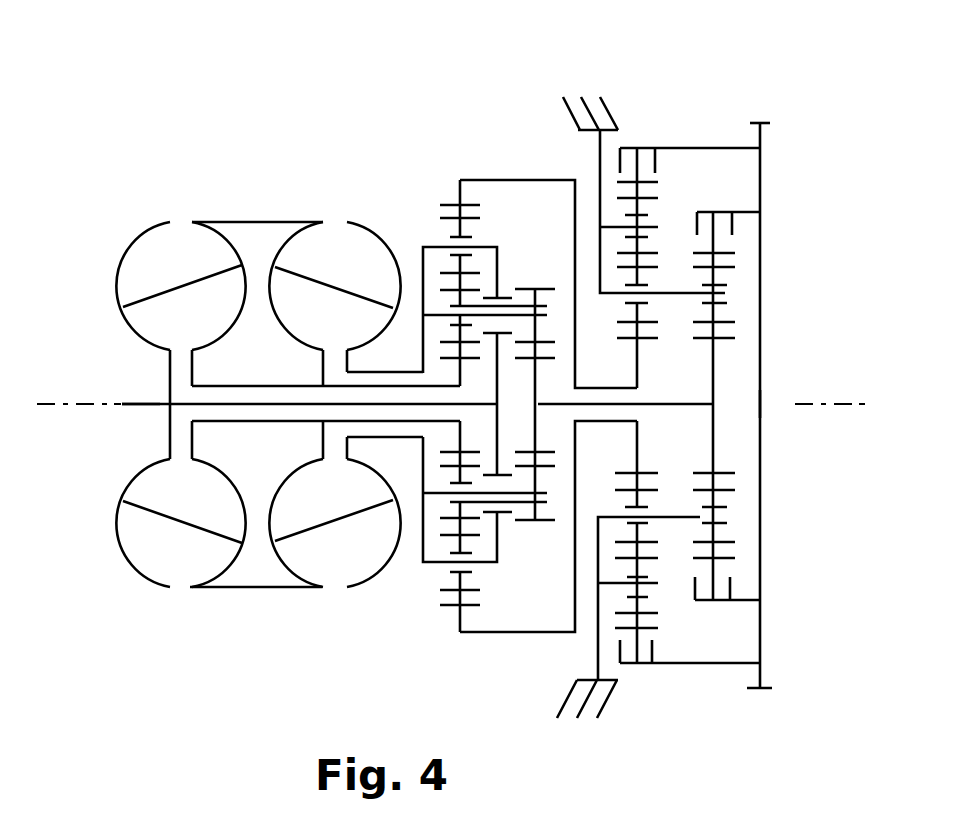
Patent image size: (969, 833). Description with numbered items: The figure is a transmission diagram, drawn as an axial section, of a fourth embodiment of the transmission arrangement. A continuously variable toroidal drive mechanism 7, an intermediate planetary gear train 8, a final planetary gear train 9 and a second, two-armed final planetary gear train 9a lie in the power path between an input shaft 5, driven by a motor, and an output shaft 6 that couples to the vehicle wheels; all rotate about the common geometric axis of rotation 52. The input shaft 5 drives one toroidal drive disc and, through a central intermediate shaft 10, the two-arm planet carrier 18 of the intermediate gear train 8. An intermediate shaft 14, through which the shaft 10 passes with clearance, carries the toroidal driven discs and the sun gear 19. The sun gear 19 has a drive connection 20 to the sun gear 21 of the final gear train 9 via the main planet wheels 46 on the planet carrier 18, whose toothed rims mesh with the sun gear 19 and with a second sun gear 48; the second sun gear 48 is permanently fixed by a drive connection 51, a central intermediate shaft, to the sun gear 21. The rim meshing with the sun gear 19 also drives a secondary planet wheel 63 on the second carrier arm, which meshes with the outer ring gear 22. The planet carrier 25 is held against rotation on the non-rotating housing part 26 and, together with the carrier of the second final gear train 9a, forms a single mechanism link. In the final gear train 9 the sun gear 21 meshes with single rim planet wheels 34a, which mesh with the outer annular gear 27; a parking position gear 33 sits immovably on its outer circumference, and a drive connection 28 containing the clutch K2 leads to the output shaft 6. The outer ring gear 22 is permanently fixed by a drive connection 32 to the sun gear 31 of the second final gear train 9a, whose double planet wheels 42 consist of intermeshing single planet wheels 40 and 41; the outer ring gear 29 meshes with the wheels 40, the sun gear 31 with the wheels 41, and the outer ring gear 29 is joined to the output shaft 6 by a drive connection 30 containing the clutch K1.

The input shaft 5 is at (133, 398).
The output shaft 6 is at (773, 402).
The continuously variable toroidal drive mechanism 7 is at (263, 593).
The intermediate planetary gear train 8 is at (486, 652).
The final planetary gear train 9 is at (785, 150).
The second final planetary gear train 9a is at (718, 672).
The central intermediate shaft 10 is at (186, 409).
The intermediate shaft 14 is at (231, 425).
The planet carrier 18 is at (499, 236).
The sun gear 19 is at (445, 455).
The drive connection 20 is at (487, 453).
The sun gear 21 is at (736, 329).
The outer ring gear 22 is at (437, 200).
The planet carrier 25 is at (592, 650).
The non-rotating housing part 26 is at (593, 103).
The outer annular gear 27 is at (743, 563).
The drive connection 28 is at (746, 606).
The outer ring gear 29 is at (661, 177).
The drive connection 30 is at (694, 145).
The sun gear 31 is at (661, 473).
The drive connection 32 is at (458, 638).
The parking position gear 33 is at (767, 122).
The single rim planet wheels 34a is at (730, 279).
The single planet wheels 40 is at (658, 619).
The single planet wheels 41 is at (660, 543).
The double planet wheels 42 is at (664, 249).
The main planet wheels 46 is at (452, 298).
The second sun gear 48 is at (546, 371).
The drive connection 51 is at (699, 412).
The geometric axis of rotation 52 is at (44, 408).
The secondary planet wheel 63 is at (488, 212).
The clutch K1 is at (636, 143).
The clutch K2 is at (713, 207).